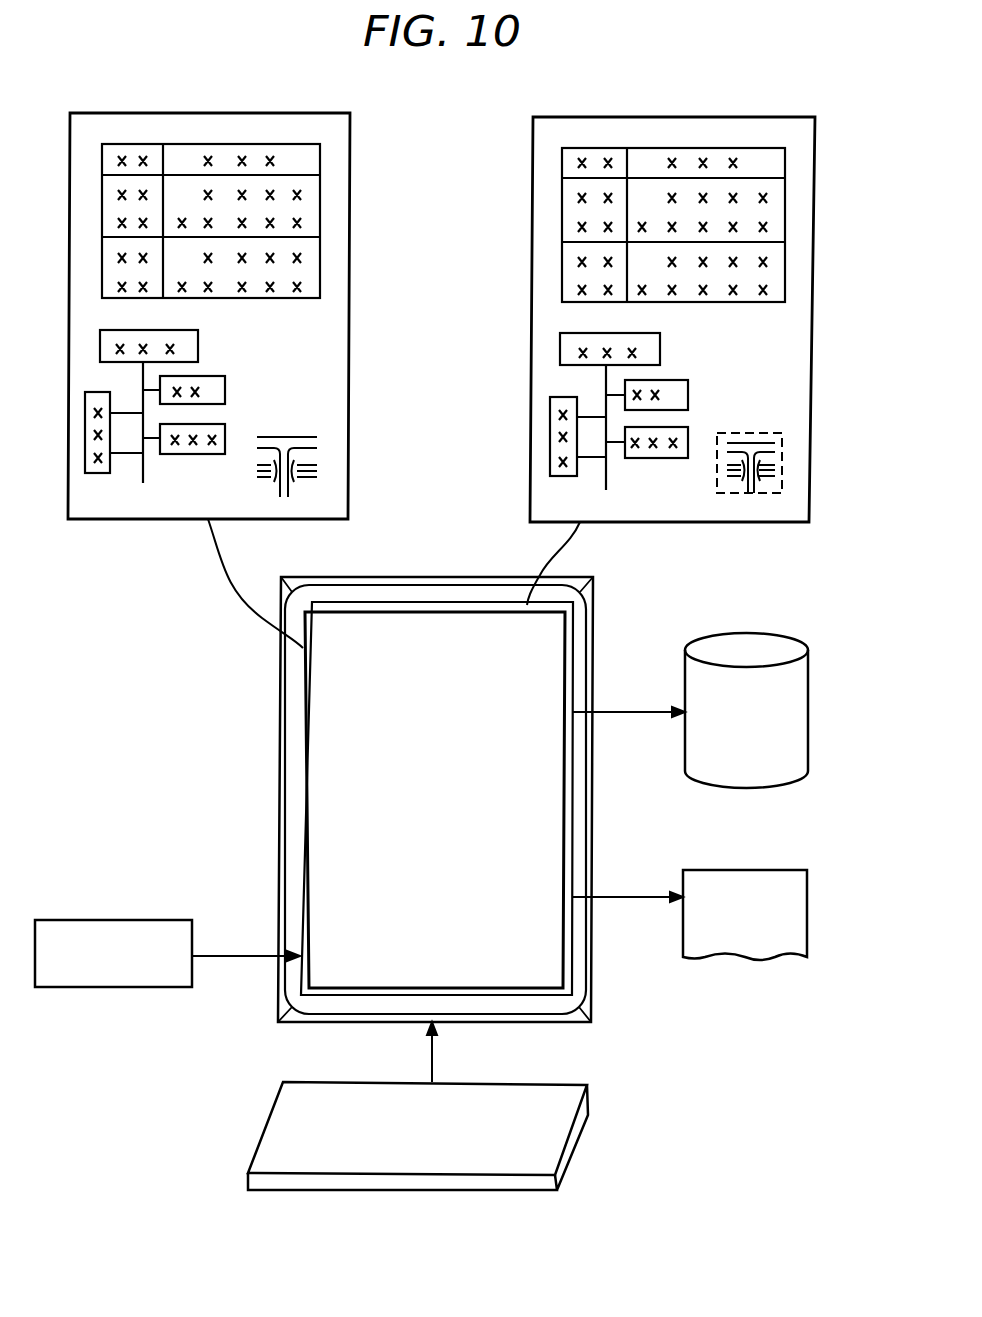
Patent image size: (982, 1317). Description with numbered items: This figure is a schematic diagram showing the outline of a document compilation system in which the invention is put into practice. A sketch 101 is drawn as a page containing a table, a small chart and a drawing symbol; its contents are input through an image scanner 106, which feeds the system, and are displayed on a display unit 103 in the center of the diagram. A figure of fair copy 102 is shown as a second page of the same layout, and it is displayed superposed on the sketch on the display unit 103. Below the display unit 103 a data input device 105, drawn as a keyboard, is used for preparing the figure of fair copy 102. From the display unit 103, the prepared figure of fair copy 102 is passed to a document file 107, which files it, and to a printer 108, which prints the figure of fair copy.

The sketch 101 is at (282, 113).
The figure of fair copy 102 is at (747, 117).
The display unit 103 is at (595, 613).
The data input device 105 is at (270, 1106).
The image scanner 106 is at (116, 919).
The document file 107 is at (808, 680).
The printer 108 is at (745, 868).